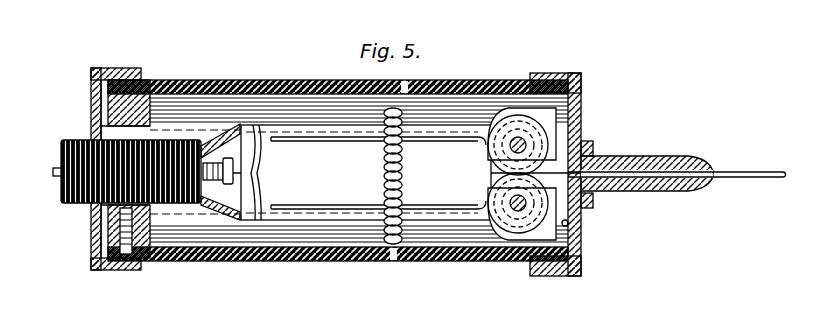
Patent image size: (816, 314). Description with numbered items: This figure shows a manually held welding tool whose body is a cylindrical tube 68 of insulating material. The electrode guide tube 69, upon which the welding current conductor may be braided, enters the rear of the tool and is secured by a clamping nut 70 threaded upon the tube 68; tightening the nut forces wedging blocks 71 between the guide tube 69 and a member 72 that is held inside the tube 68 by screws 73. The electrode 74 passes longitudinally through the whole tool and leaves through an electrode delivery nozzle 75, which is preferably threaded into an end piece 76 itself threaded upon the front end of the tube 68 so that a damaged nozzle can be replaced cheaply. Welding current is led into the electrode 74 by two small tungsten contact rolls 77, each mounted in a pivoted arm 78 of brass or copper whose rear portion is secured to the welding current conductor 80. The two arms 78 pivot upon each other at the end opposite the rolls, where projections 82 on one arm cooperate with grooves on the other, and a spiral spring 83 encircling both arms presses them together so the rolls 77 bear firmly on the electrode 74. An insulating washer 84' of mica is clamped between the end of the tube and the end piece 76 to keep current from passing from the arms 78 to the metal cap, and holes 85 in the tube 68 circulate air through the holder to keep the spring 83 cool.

The cylindrical tube 68 is at (274, 72).
The electrode guide tube 69 is at (72, 195).
The clamping nut 70 is at (100, 60).
The wedging blocks 71 is at (166, 100).
The member 72 is at (136, 74).
The screws 73 is at (123, 262).
The electrode 74 is at (733, 171).
The electrode delivery nozzle 75 is at (655, 150).
The end piece 76 is at (575, 124).
The contact rolls 77 is at (530, 130).
The pivoted arm 78 is at (306, 120).
The welding current conductor 80 is at (214, 192).
The projections 82 is at (250, 232).
The spiral spring 83 is at (378, 218).
The insulating washer 84' is at (595, 223).
The holes 85 is at (400, 74).